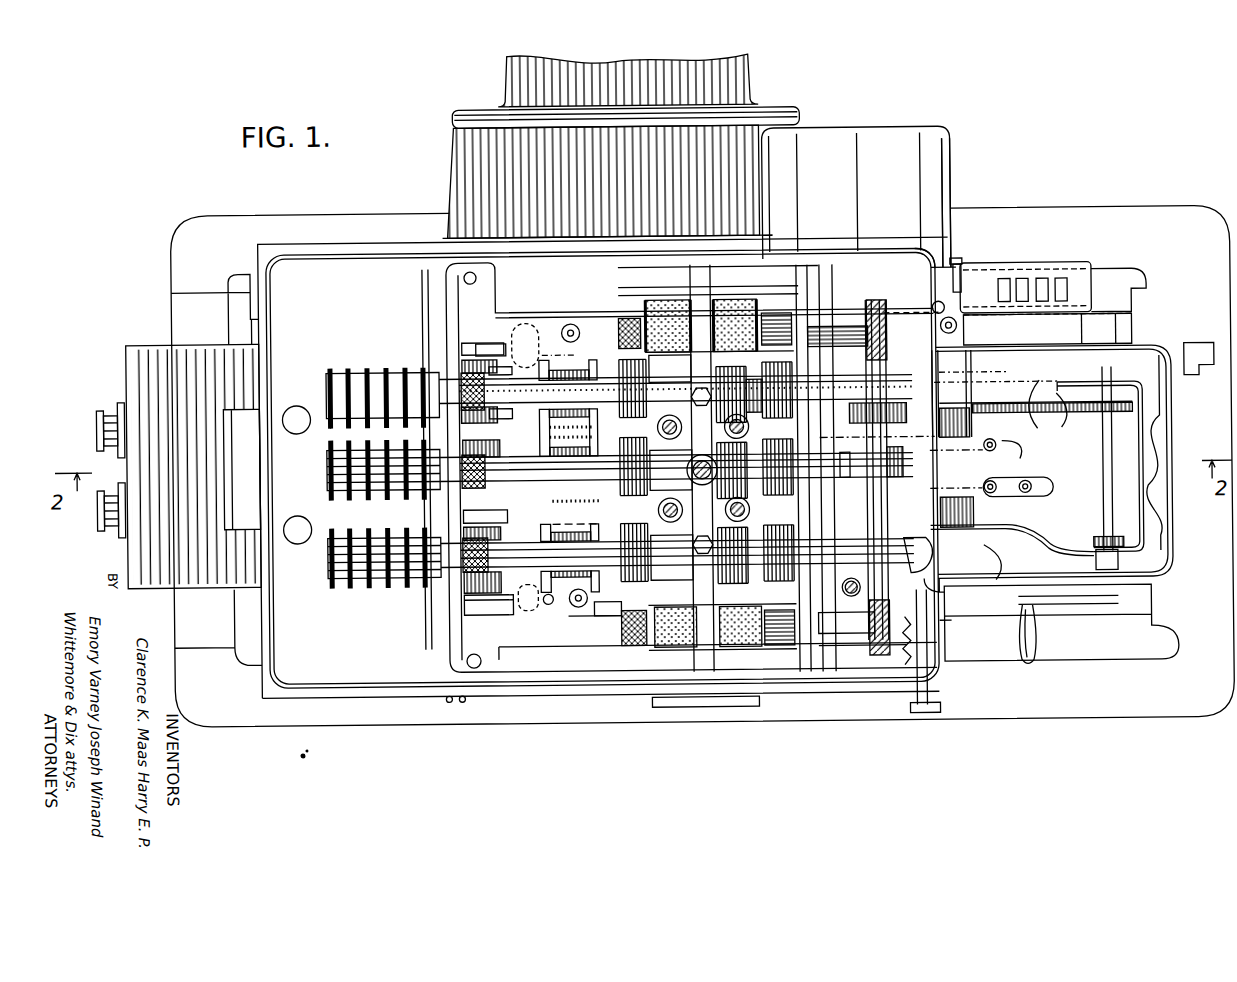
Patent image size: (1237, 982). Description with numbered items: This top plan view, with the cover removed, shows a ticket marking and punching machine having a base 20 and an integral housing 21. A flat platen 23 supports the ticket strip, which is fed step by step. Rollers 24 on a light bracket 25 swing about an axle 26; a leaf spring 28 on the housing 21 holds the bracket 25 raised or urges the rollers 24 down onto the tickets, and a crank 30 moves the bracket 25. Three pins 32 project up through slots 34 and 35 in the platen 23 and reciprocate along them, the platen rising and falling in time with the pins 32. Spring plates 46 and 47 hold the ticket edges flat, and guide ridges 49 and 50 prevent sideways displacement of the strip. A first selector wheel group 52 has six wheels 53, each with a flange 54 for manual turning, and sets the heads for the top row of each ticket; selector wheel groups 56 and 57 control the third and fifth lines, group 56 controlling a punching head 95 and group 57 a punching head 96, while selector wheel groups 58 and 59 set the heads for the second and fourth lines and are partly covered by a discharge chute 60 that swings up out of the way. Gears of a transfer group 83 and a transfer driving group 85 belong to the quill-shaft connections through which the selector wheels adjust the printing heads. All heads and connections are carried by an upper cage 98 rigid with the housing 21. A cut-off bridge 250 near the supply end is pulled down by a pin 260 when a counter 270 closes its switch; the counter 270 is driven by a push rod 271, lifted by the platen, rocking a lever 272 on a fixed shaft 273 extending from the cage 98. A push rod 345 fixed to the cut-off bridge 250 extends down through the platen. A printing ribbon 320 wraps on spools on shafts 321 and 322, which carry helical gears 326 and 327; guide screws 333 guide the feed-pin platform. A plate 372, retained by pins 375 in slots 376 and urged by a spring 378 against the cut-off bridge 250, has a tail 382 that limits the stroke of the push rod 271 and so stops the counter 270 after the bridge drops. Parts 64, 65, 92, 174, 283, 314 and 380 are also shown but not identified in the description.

The base 20 is at (1085, 228).
The housing 21 is at (1152, 288).
The platen 23 is at (1025, 404).
The rollers 24 is at (955, 418).
The bracket 25 is at (1062, 413).
The axle 26 is at (1103, 516).
The leaf spring 28 is at (1155, 468).
The crank 30 is at (1065, 610).
The pins 32 is at (990, 461).
The slot 34 is at (1022, 465).
The slot 35 is at (1055, 496).
The spring plate 46 is at (1130, 335).
The spring plate 47 is at (990, 560).
The guide ridge 49 is at (1148, 388).
The guide ridge 50 is at (1045, 568).
The first selector wheel group 52 is at (318, 394).
The selector wheels 53 is at (427, 370).
The flange 54 is at (372, 430).
The selector wheel group 56 is at (340, 500).
The selector wheel group 57 is at (347, 595).
The selector wheel group 58 is at (90, 425).
The selector wheel group 59 is at (95, 538).
The discharge chute 60 is at (140, 368).
The bar 64 is at (618, 349).
The latch wire 65 is at (606, 376).
The transfer group 83 is at (796, 368).
The transfer driving group 85 is at (732, 371).
The pin row 92 is at (548, 427).
The punching head 95 is at (552, 505).
The punching head 96 is at (552, 529).
The upper cage 98 is at (1085, 353).
The key cylinder 174 is at (756, 86).
The cut-off bridge 250 is at (880, 390).
The pin 260 is at (885, 497).
The counter 270 is at (1088, 287).
The push rod 271 is at (980, 341).
The lever 272 is at (962, 270).
The fixed shaft 273 is at (955, 260).
The stop 283 is at (1188, 378).
The cam 314 is at (922, 556).
The ribbon 320 is at (718, 335).
The shaft 321 is at (850, 653).
The shaft 322 is at (838, 327).
The helical gear 326 is at (886, 668).
The helical gear 327 is at (862, 317).
The guide screws 333 is at (880, 537).
The push rod 345 is at (940, 598).
The plate 372 is at (950, 386).
The pins 375 is at (942, 630).
The slots 376 is at (958, 650).
The spring 378 is at (938, 668).
The screw 380 is at (940, 716).
The tail 382 is at (958, 310).